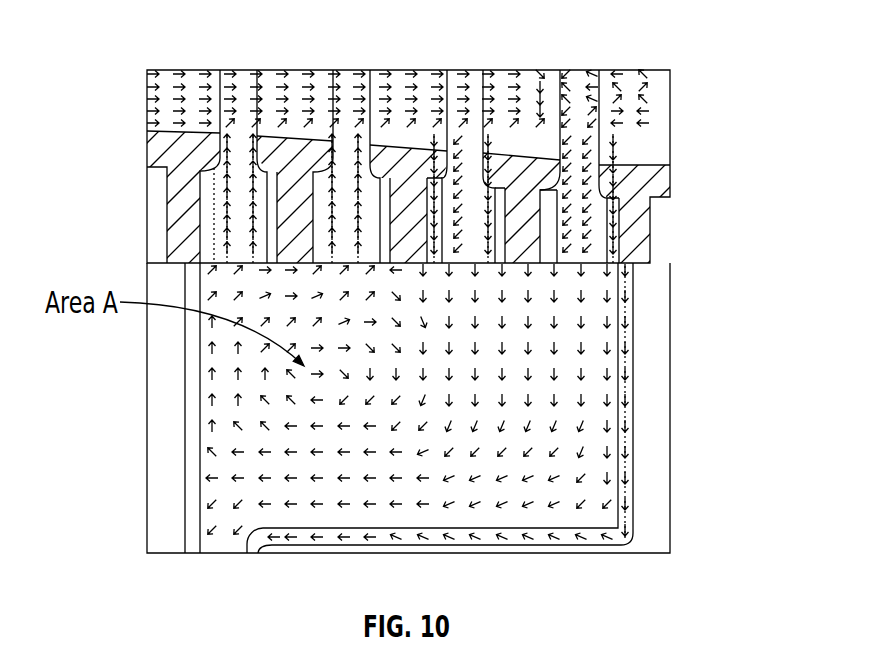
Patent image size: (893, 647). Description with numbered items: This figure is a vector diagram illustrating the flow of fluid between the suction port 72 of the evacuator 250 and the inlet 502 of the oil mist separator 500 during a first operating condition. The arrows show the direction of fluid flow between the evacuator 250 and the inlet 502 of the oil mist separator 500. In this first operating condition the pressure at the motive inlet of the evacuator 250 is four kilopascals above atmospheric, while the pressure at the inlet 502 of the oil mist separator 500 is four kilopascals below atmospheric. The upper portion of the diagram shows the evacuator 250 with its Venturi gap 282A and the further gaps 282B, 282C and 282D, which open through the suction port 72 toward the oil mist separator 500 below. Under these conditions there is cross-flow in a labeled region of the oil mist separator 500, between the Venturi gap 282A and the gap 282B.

The Venturi gap 282A is at (243, 88).
The gap 282B is at (347, 88).
The gap 282C is at (475, 88).
The gap 282D is at (568, 97).
The evacuator 250 is at (680, 180).
The suction port 72 is at (658, 240).
The oil mist separator 500 is at (670, 315).
The inlet 502 is at (593, 417).